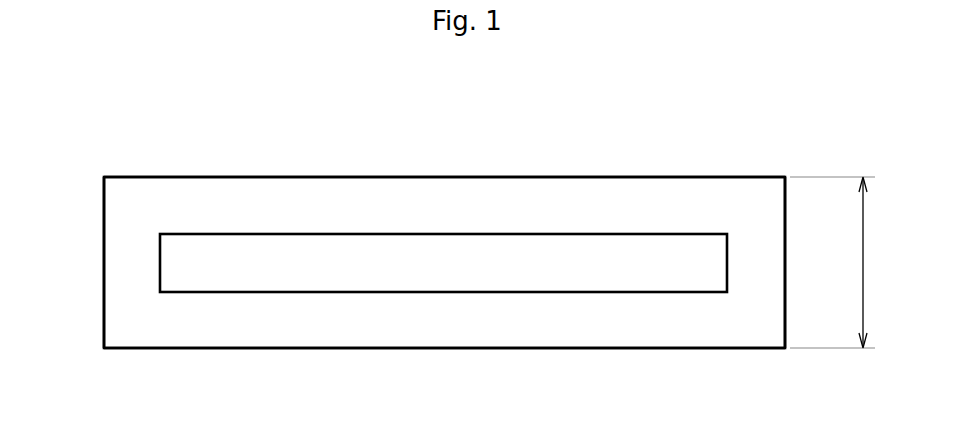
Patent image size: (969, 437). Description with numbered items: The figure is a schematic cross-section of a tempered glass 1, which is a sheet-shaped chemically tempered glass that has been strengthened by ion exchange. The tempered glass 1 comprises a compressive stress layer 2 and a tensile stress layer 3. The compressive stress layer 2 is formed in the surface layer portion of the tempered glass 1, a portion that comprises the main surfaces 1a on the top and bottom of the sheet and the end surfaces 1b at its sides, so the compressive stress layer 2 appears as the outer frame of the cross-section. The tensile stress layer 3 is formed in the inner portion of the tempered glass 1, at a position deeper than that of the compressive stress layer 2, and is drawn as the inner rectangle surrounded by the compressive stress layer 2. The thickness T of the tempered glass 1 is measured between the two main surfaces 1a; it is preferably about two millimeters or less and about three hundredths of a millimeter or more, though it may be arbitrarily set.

The tempered glass 1 is at (428, 160).
The main surfaces 1a is at (326, 177).
The end surfaces 1b is at (104, 265).
The compressive stress layer 2 is at (515, 198).
The tensile stress layer 3 is at (580, 250).
The thickness T is at (837, 262).